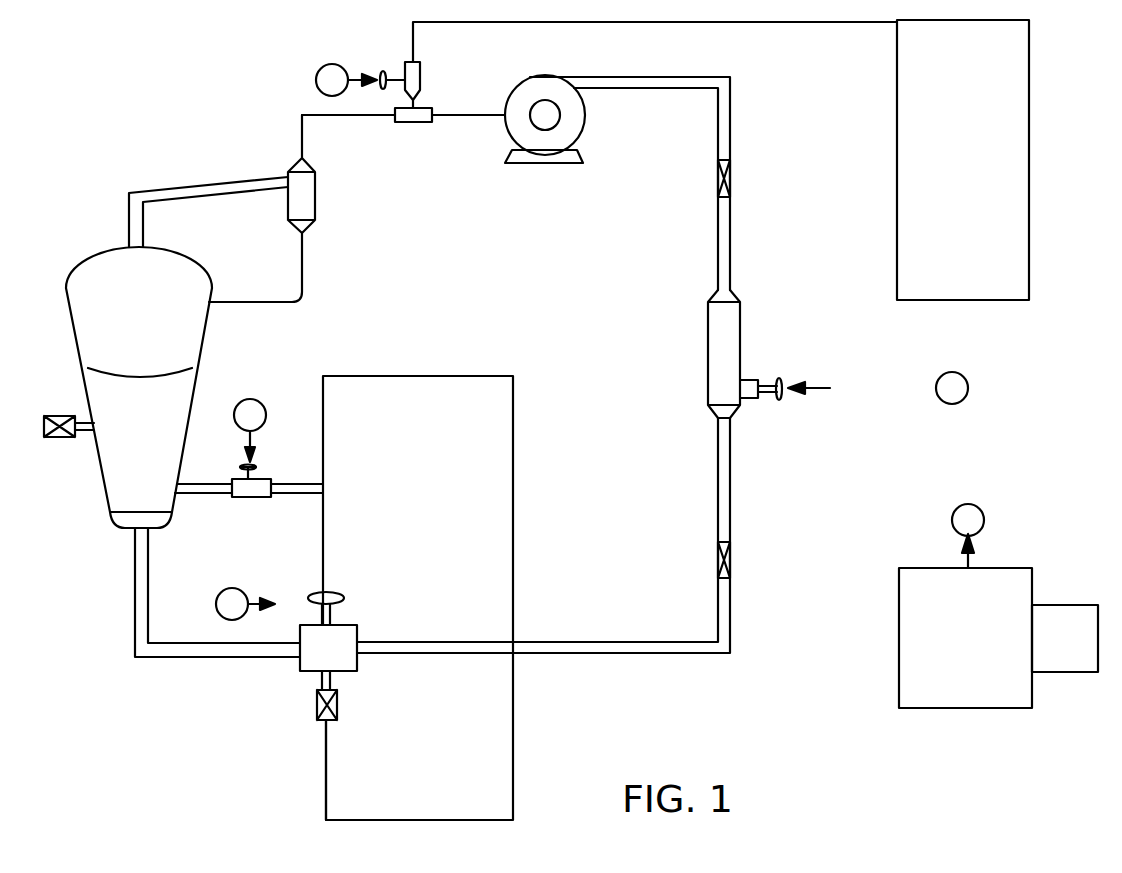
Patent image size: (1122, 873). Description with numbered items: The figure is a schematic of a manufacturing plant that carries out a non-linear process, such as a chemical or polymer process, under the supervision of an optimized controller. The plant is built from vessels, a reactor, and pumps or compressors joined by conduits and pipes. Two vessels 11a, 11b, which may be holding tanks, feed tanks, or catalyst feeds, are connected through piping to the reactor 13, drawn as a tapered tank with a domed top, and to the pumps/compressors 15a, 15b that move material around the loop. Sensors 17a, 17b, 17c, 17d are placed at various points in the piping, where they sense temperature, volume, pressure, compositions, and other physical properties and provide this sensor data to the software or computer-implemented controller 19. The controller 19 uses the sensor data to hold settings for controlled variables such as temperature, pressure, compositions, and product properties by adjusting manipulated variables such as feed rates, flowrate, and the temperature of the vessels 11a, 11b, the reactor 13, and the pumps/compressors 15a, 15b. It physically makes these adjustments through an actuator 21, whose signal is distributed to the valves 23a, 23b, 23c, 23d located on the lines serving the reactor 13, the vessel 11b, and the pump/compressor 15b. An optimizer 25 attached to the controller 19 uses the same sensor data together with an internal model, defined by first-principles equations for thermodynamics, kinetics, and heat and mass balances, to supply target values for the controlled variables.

The vessel 11a is at (981, 140).
The vessel 11b is at (437, 541).
The reactor 13 is at (152, 361).
The pump/compressor 15a is at (505, 127).
The pump/compressor 15b is at (742, 330).
The sensor 17a is at (60, 440).
The sensor 17b is at (338, 708).
The sensor 17c is at (732, 568).
The sensor 17d is at (732, 182).
The controller 19 is at (979, 653).
The actuator 21 is at (985, 519).
The valve 23a is at (262, 468).
The valve 23b is at (310, 592).
The valve 23c is at (781, 400).
The valve 23d is at (382, 70).
The optimizer 25 is at (1081, 653).